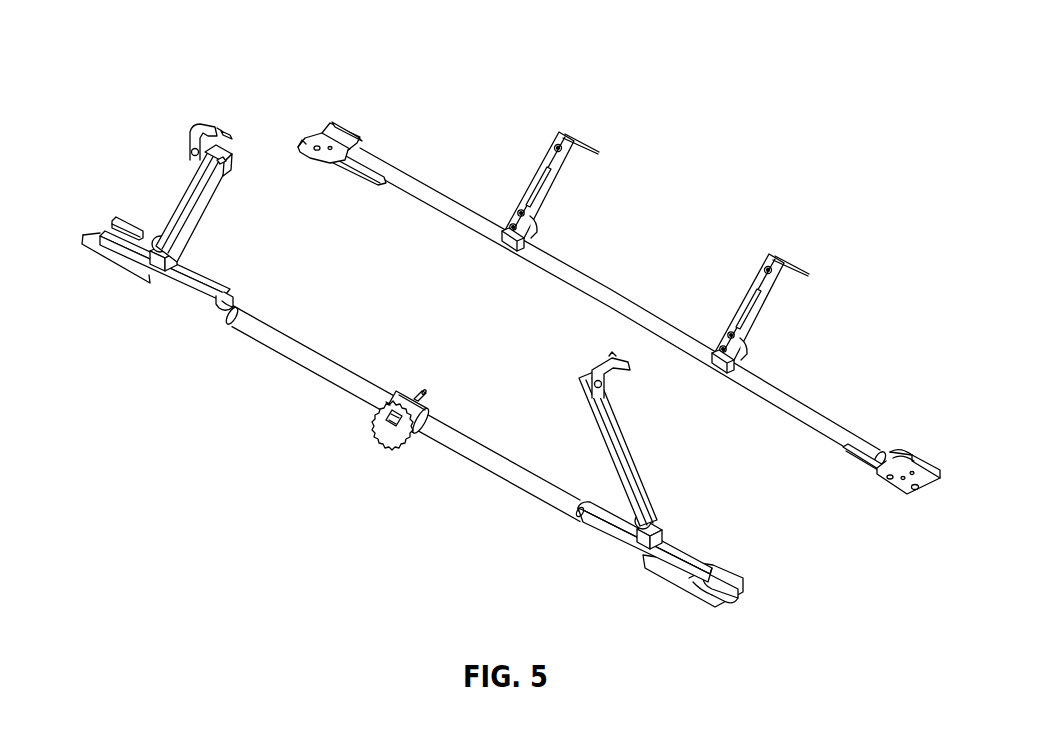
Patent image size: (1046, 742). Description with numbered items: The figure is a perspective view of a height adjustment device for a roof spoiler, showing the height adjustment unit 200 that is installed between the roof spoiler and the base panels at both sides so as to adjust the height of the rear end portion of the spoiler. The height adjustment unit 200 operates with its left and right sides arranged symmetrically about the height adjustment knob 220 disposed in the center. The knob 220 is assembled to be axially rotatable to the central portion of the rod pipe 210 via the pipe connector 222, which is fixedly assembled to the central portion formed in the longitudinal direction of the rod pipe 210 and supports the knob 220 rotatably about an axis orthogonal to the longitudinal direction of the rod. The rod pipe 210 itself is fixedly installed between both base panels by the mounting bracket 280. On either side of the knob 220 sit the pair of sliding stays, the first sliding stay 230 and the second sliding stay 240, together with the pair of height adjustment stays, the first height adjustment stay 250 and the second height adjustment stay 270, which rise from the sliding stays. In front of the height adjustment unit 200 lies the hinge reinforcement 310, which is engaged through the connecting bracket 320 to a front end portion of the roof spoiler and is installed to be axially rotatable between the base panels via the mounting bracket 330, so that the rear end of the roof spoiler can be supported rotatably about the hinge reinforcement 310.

The height adjustment unit 200 is at (150, 180).
The rod pipe 210 is at (287, 348).
The height adjustment knob 220 is at (380, 420).
The pipe connector 222 is at (396, 398).
The first sliding stay 230 is at (188, 290).
The second sliding stay 240 is at (589, 531).
The first height adjustment stay 250 is at (206, 204).
The second height adjustment stay 270 is at (644, 468).
The mounting bracket 280 is at (120, 216).
The hinge reinforcement 310 is at (553, 262).
The connecting bracket 320 is at (552, 155).
The mounting bracket 330 is at (343, 125).